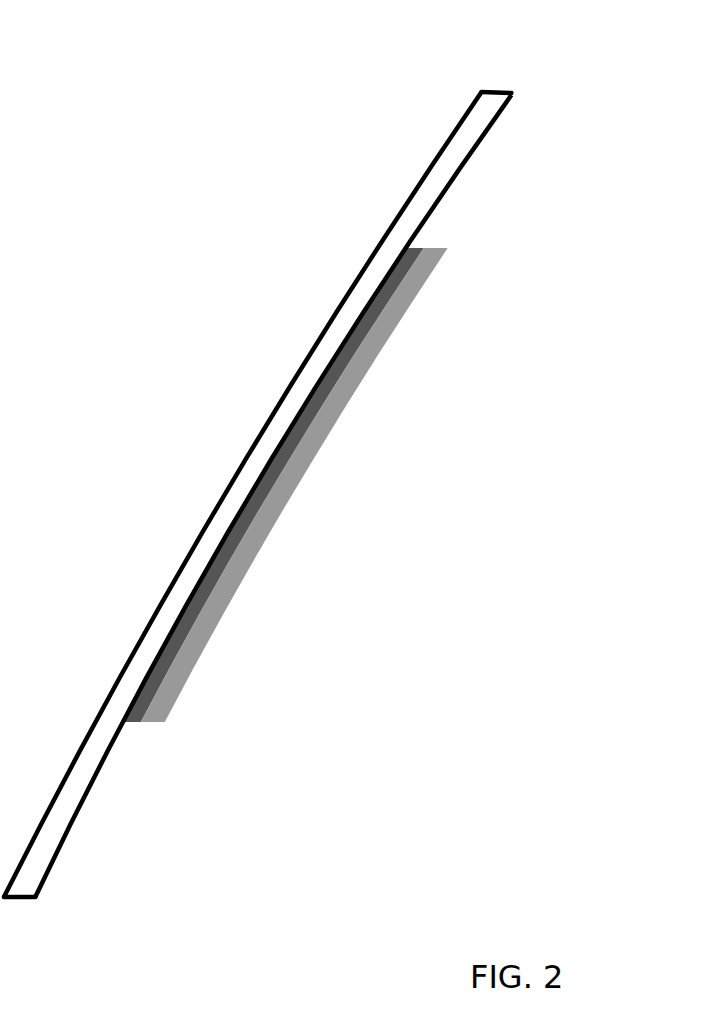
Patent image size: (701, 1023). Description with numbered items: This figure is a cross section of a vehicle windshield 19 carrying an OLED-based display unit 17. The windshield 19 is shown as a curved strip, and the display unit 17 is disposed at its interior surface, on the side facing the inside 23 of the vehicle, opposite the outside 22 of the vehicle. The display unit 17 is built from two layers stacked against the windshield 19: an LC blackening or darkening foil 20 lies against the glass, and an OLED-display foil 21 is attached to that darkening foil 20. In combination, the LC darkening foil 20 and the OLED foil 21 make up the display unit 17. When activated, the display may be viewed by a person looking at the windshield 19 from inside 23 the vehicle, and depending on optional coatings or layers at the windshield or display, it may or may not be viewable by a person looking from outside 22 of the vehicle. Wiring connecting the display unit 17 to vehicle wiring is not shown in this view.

The display unit 17 is at (412, 350).
The windshield 19 is at (497, 92).
The LC blackening or darkening foil 20 is at (413, 250).
The OLED-display foil 21 is at (443, 247).
The outside of the vehicle 22 is at (243, 494).
The inside of the vehicle 23 is at (273, 496).